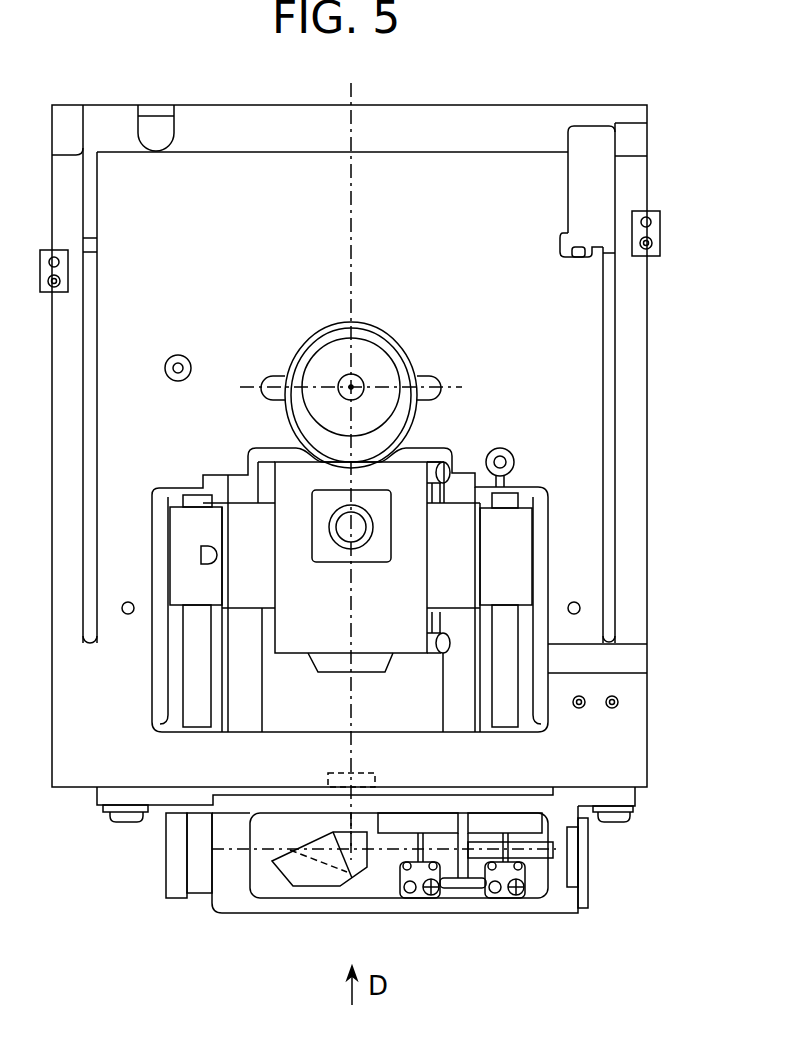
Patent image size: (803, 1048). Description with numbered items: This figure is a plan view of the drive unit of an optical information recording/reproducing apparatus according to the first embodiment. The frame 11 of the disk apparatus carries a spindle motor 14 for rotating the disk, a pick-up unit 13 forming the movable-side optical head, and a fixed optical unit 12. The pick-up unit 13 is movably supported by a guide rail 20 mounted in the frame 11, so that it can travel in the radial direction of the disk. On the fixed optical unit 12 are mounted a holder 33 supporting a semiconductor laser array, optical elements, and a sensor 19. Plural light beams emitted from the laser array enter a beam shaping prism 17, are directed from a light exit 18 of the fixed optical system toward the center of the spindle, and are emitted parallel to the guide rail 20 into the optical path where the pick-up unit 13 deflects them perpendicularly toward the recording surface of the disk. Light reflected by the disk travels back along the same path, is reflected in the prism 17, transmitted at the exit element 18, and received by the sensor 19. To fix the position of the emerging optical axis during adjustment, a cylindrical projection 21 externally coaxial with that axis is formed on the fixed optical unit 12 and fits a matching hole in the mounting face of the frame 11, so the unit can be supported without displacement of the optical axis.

The frame 11 is at (511, 165).
The fixed optical unit 12 is at (233, 900).
The pick-up unit 13 is at (380, 530).
The spindle motor 14 is at (380, 366).
The beam shaping prism 17 is at (316, 876).
The light exit 18 is at (390, 858).
The sensor 19 is at (588, 870).
The guide rail 20 is at (247, 717).
The cylindrical projection 21 is at (280, 804).
The holder 33 is at (190, 870).